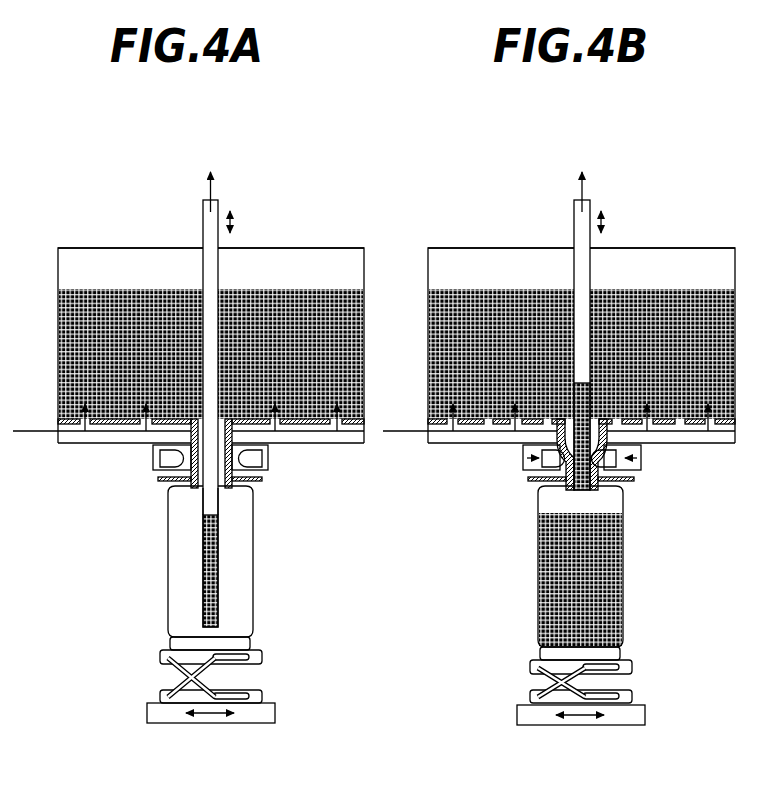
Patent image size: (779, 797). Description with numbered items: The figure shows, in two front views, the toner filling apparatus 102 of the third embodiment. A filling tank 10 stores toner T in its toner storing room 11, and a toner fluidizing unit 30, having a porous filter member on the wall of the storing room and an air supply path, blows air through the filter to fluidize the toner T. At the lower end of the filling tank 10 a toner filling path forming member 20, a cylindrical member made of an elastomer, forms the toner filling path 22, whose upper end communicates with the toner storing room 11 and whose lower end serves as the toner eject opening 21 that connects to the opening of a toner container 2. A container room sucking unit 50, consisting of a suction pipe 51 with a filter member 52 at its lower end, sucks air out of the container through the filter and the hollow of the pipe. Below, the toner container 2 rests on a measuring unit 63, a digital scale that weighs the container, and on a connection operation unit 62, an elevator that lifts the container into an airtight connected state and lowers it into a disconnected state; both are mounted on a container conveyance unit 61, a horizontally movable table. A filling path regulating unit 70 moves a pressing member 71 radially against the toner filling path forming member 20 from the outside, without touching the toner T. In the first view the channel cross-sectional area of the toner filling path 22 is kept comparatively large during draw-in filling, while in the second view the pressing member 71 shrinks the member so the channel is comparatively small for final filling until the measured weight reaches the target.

In FIG. 4A, the toner filling apparatus 102 is at (303, 180).
In FIG. 4B, the toner filling apparatus 102 is at (676, 180).
In FIG. 4A, the filling tank 10 is at (365, 277).
In FIG. 4B, the filling tank 10 is at (733, 278).
In FIG. 4A, the toner storing room 11 is at (320, 262).
In FIG. 4B, the toner storing room 11 is at (693, 263).
In FIG. 4A, the toner T is at (72, 317).
In FIG. 4B, the toner T is at (442, 320).
In FIG. 4A, the toner fluidizing unit 30 is at (72, 432).
In FIG. 4B, the toner fluidizing unit 30 is at (442, 432).
In FIG. 4A, the toner container 2 is at (254, 558).
In FIG. 4B, the toner container 2 is at (624, 560).
In FIG. 4A, the container room sucking unit 50 is at (222, 509).
In FIG. 4B, the container room sucking unit 50 is at (587, 331).
In FIG. 4A, the suction pipe 51 is at (210, 498).
In FIG. 4A, the filter member 52 is at (205, 585).
In FIG. 4A, the toner filling path forming member 20 is at (233, 452).
In FIG. 4B, the toner filling path forming member 20 is at (601, 472).
In FIG. 4A, the toner eject opening 21 is at (197, 487).
In FIG. 4B, the toner eject opening 21 is at (564, 492).
In FIG. 4A, the toner filling path 22 is at (233, 470).
In FIG. 4B, the toner filling path 22 is at (607, 482).
In FIG. 4A, the filling path regulating unit 70 is at (155, 467).
In FIG. 4B, the filling path regulating unit 70 is at (523, 458).
In FIG. 4A, the pressing member 71 is at (165, 453).
In FIG. 4B, the pressing member 71 is at (543, 468).
In FIG. 4A, the measuring unit 63 is at (243, 643).
In FIG. 4B, the measuring unit 63 is at (613, 655).
In FIG. 4A, the connection operation unit 62 is at (261, 698).
In FIG. 4B, the connection operation unit 62 is at (631, 700).
In FIG. 4A, the container conveyance unit 61 is at (276, 715).
In FIG. 4B, the container conveyance unit 61 is at (646, 717).